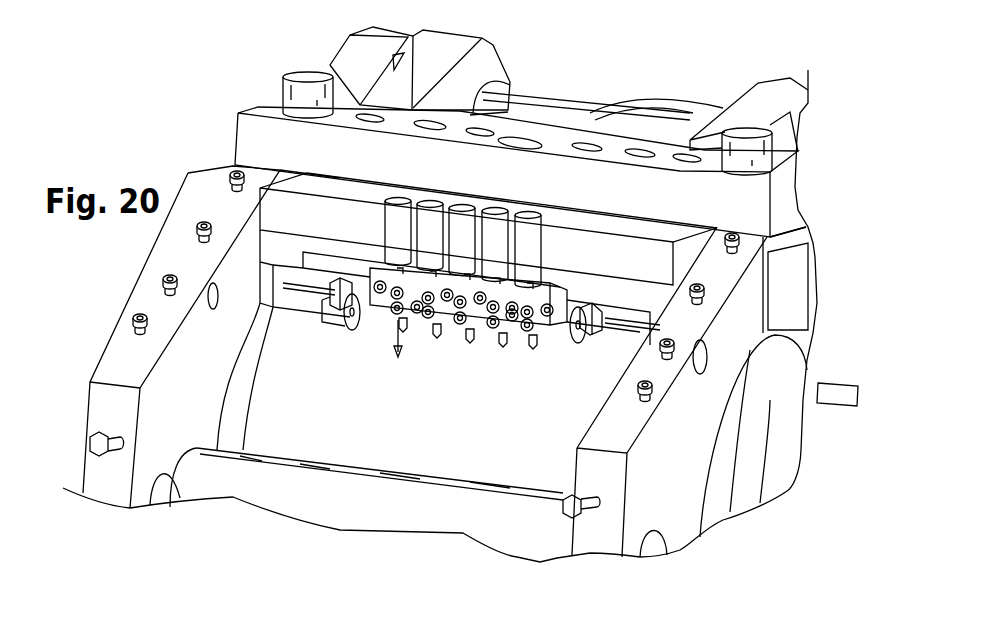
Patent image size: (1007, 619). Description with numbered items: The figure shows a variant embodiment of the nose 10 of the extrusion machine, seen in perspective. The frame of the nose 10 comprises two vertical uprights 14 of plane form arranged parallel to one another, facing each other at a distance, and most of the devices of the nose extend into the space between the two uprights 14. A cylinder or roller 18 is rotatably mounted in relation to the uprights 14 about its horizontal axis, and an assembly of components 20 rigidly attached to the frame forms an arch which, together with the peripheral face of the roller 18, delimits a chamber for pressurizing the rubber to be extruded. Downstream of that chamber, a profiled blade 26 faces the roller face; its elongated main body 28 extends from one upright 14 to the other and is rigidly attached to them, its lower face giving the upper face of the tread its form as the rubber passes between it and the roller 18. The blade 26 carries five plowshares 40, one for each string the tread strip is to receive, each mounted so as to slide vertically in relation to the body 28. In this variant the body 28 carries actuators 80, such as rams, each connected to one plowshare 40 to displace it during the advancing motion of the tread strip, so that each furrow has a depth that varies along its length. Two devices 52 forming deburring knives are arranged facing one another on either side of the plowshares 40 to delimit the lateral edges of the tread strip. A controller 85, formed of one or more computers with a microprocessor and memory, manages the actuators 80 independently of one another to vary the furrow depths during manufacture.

The nose 10 is at (742, 68).
The vertical uprights 14 is at (118, 408).
The roller 18 is at (313, 440).
The assembly of components 20 is at (512, 130).
The profiled blade 26 is at (644, 287).
The main body 28 is at (548, 283).
The plowshares 40 is at (428, 333).
The devices forming knives 52 is at (326, 316).
The actuators 80 is at (402, 205).
The controller 85 is at (845, 410).